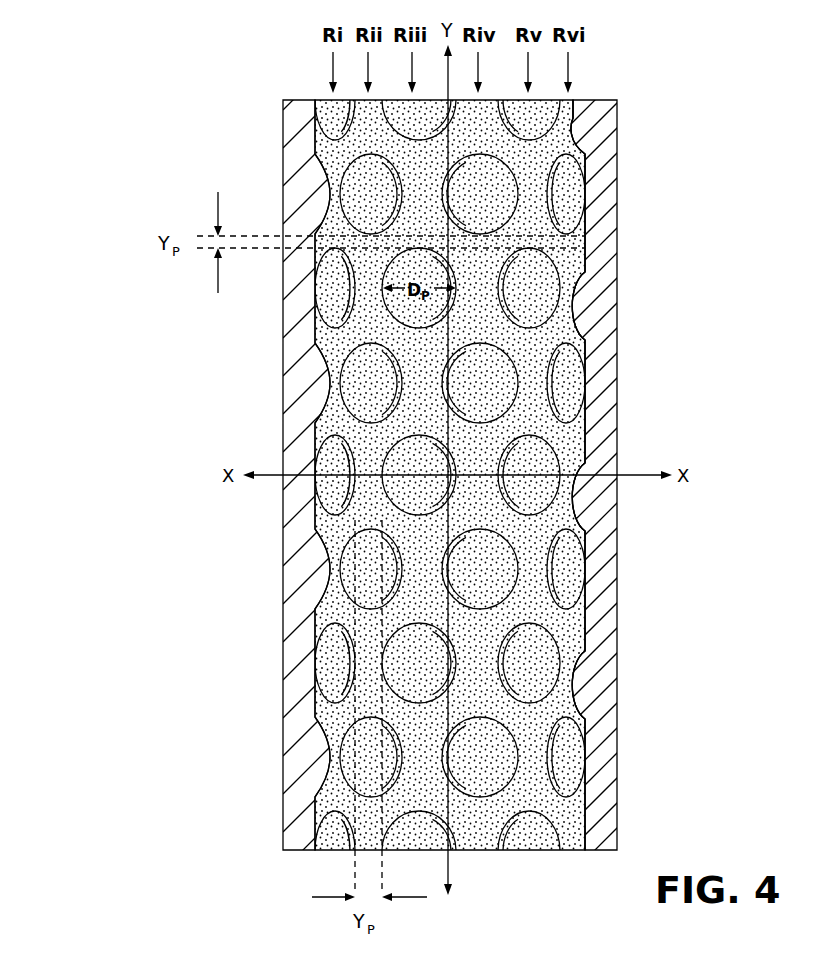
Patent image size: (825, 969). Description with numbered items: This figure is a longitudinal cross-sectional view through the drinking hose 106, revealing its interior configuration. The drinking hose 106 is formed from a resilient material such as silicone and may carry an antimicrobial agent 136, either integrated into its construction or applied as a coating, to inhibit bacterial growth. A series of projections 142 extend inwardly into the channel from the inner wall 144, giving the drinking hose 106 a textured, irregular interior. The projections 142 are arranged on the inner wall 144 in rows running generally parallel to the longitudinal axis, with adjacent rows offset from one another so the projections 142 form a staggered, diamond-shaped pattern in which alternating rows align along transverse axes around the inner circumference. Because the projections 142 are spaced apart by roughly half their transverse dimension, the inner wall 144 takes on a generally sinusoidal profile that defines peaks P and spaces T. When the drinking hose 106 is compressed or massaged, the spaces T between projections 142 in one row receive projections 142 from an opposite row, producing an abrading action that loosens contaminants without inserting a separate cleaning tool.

The drinking hose 106 is at (624, 345).
The antimicrobial agent 136 is at (532, 163).
The projections 142 is at (337, 292).
The inner wall 144 is at (585, 250).
The peaks P is at (487, 377).
The spaces T is at (480, 453).